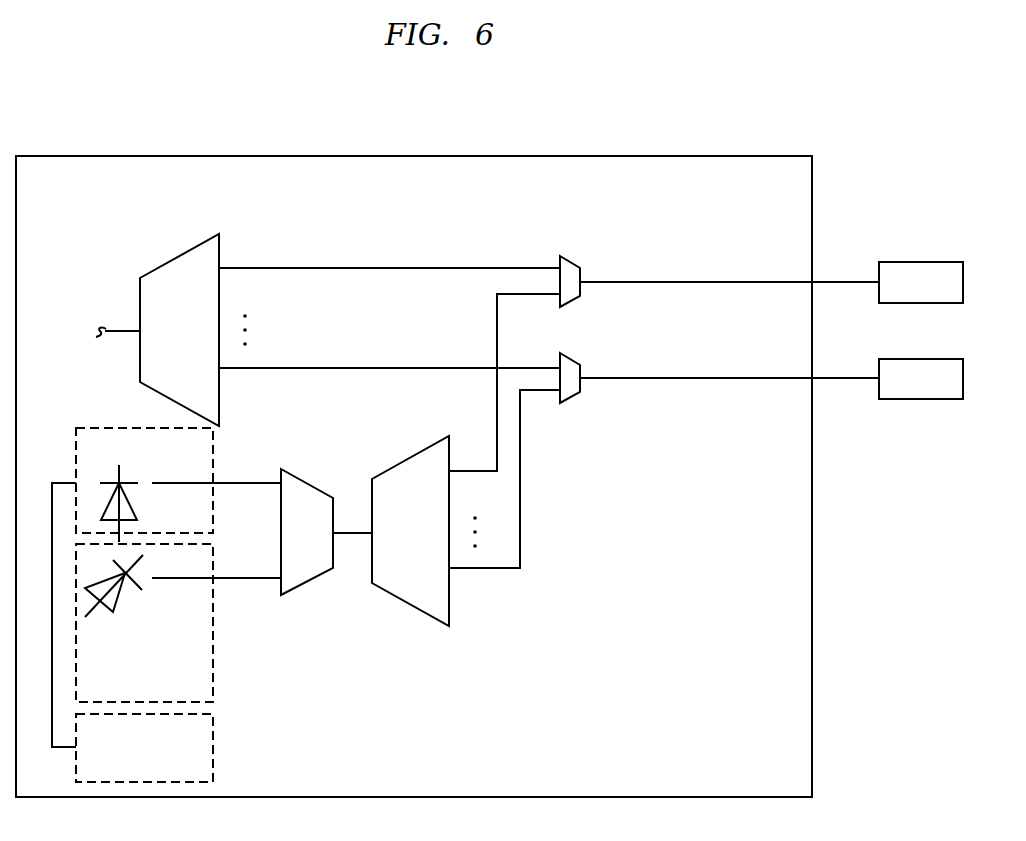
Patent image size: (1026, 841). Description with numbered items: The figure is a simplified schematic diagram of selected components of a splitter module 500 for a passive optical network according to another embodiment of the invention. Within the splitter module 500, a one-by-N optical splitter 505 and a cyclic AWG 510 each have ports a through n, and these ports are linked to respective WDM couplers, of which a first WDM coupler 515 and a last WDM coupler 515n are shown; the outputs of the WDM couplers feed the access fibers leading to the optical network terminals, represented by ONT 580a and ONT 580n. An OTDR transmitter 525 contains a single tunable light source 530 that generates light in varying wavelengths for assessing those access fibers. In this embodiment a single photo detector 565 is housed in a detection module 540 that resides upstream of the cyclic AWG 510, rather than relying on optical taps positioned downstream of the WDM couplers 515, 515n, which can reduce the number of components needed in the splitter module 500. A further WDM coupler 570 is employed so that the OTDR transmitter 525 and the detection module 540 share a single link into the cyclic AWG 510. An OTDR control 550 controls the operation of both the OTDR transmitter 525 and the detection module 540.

The splitter module 500 is at (712, 215).
The optical splitter 505 is at (197, 345).
The cyclic AWG 510 is at (430, 546).
The WDM coupler 515 is at (575, 258).
The WDM coupler 515n is at (575, 355).
The OTDR transmitter 525 is at (215, 463).
The tunable light source 530 is at (128, 500).
The detection module 540 is at (215, 652).
The OTDR control 550 is at (215, 752).
The photo detector 565 is at (118, 593).
The WDM coupler 570 is at (303, 480).
The ONT 580a is at (926, 262).
The ONT 580n is at (926, 359).